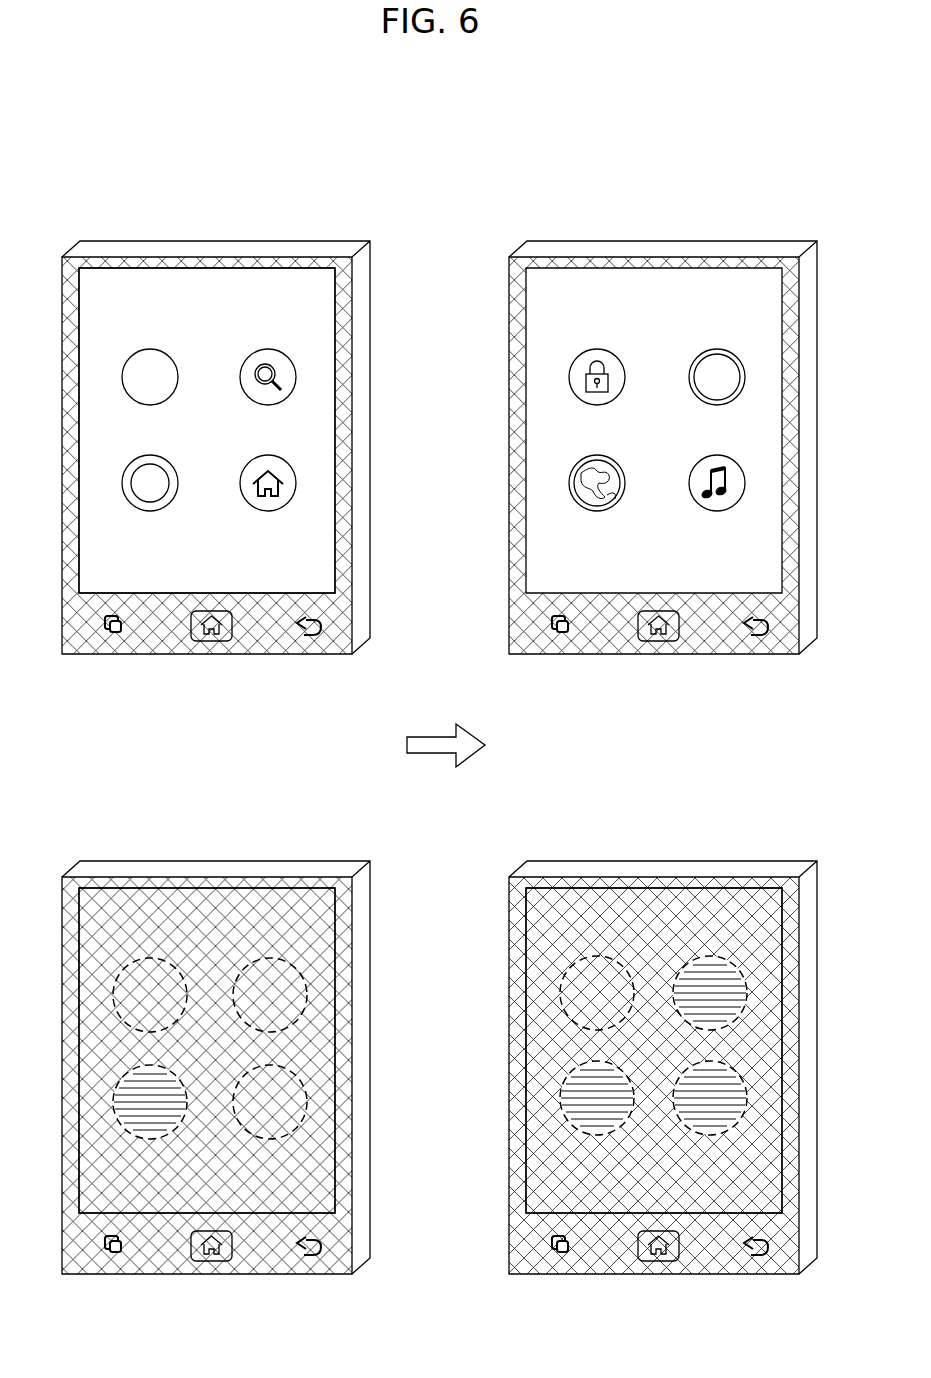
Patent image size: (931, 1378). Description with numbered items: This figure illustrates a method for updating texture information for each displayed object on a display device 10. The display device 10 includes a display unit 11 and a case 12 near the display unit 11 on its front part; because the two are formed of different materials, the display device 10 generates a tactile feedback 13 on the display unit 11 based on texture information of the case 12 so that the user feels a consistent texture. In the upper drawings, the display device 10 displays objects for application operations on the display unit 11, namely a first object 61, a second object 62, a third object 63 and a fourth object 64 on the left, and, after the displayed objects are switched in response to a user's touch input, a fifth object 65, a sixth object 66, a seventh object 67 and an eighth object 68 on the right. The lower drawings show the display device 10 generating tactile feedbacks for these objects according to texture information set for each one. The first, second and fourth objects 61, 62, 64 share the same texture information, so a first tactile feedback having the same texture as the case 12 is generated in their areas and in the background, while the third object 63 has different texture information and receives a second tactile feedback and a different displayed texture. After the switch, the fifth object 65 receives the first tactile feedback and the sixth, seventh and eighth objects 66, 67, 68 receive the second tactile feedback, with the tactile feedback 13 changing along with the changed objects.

The display device 10 is at (244, 718).
The display unit 11 is at (252, 430).
The case 12 is at (286, 238).
The tactile feedback 13 is at (252, 1050).
The first object 61 is at (134, 354).
The second object 62 is at (253, 354).
The third object 63 is at (134, 460).
The fourth object 64 is at (253, 460).
The fifth object 65 is at (581, 354).
The sixth object 66 is at (701, 354).
The seventh object 67 is at (581, 460).
The eighth object 68 is at (701, 460).